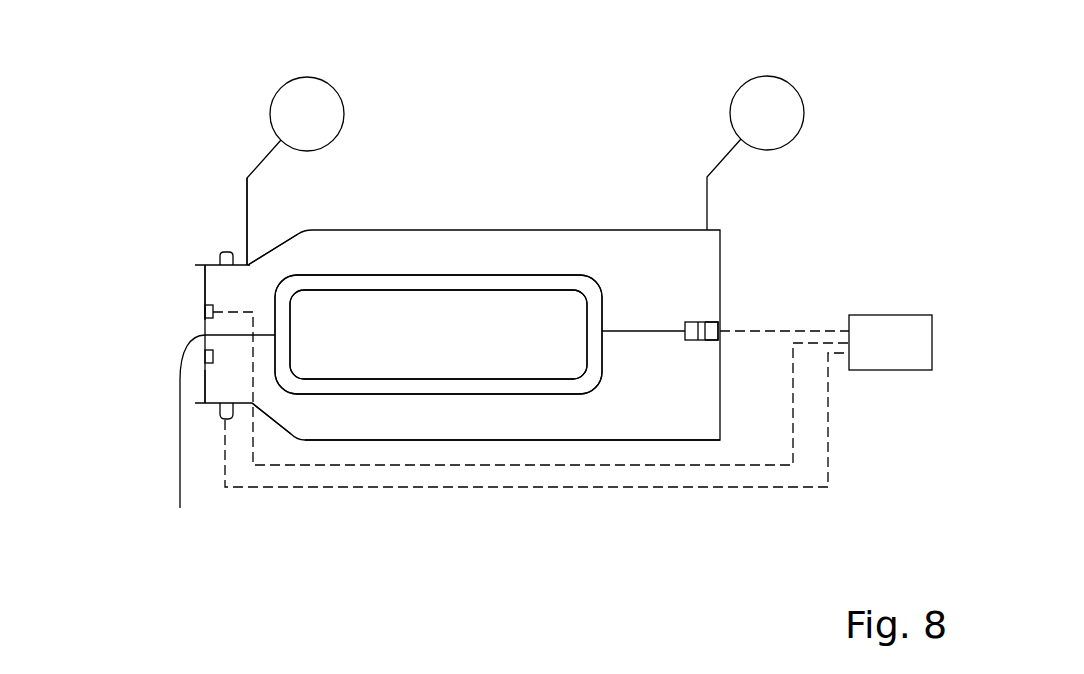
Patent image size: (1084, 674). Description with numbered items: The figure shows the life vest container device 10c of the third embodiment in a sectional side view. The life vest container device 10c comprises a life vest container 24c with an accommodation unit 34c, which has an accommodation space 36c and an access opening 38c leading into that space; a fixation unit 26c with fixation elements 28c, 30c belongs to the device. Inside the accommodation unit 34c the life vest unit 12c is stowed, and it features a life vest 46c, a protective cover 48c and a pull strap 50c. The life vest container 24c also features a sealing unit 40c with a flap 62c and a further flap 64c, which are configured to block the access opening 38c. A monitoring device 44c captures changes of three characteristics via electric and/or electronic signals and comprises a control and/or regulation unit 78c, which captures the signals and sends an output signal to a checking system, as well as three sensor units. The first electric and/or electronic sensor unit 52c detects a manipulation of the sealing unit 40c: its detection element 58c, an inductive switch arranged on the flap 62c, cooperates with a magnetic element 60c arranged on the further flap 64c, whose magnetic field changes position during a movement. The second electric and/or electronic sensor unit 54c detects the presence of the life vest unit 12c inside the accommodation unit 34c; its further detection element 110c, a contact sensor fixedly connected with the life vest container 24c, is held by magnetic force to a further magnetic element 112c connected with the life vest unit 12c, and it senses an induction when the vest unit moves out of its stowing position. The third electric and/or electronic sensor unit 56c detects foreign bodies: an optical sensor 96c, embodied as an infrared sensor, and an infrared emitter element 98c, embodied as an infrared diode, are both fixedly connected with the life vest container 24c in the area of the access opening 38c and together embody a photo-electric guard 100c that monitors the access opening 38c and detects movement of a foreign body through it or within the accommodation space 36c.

The life vest container device 10c is at (160, 88).
The life vest unit 12c is at (606, 398).
The life vest container 24c is at (358, 450).
The fixation unit 26c is at (241, 128).
The fixation element 28c is at (307, 77).
The fixation element 30c is at (786, 77).
The accommodation unit 34c is at (455, 441).
The accommodation space 36c is at (615, 248).
The access opening 38c is at (256, 293).
The sealing unit 40c is at (180, 336).
The monitoring device 44c is at (544, 156).
The life vest 46c is at (560, 342).
The protective cover 48c is at (522, 395).
The pull strap 50c is at (180, 496).
The first electric and/or electronic sensor unit 52c is at (180, 322).
The second electric and/or electronic sensor unit 54c is at (679, 350).
The third electric and/or electronic sensor unit 56c is at (239, 494).
The detection element 58c is at (204, 312).
The magnetic element 60c is at (204, 356).
The flap 62c is at (204, 287).
The further flap 64c is at (204, 388).
The control and/or regulation unit 78c is at (890, 343).
The optical sensor 96c is at (224, 420).
The infrared emitter element 98c is at (226, 252).
The photo-electric guard 100c is at (247, 280).
The further detection element 110c is at (716, 322).
The further magnetic element 112c is at (697, 322).